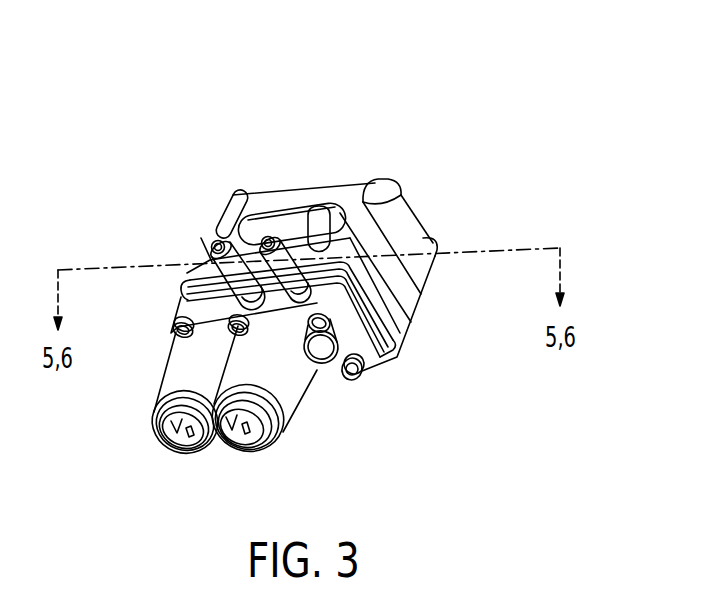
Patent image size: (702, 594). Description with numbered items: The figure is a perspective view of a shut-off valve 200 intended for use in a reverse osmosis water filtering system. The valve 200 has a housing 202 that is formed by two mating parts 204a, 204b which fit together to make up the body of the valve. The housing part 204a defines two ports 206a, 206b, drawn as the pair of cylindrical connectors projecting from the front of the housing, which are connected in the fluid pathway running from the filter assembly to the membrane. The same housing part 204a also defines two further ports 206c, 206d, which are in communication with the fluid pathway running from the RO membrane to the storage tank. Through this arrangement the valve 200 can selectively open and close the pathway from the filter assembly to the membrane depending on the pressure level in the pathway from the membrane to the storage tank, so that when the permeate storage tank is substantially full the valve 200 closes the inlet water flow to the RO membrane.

The shut-off valve 200 is at (355, 61).
The housing 202 is at (400, 287).
The housing part 204a is at (327, 372).
The housing part 204b is at (352, 185).
The port 206a is at (255, 441).
The port 206b is at (178, 443).
The port 206c is at (268, 236).
The port 206d is at (212, 243).